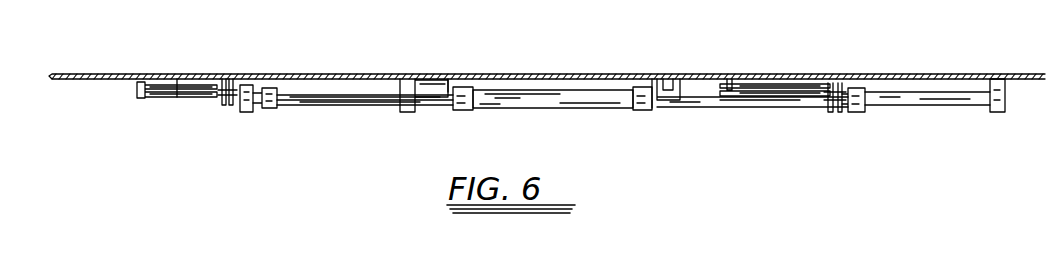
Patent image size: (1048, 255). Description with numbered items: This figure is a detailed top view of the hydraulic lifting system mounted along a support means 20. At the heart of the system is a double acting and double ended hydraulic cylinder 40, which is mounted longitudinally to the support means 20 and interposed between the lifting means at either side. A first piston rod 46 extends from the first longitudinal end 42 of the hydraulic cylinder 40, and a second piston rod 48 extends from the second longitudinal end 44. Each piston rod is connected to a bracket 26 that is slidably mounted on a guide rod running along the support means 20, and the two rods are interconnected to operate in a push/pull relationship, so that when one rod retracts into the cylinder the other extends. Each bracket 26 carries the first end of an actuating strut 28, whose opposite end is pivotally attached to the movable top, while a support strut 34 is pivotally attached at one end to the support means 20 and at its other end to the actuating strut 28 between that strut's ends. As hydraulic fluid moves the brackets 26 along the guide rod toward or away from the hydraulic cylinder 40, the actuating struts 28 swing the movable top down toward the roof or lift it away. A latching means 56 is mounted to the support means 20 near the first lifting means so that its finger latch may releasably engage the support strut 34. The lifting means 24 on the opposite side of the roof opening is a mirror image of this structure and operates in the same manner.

The support means 20 is at (78, 72).
The lifting means 24 is at (253, 110).
The bracket 26 is at (260, 109).
The actuating strut 28 is at (178, 74).
The support strut 34 is at (173, 97).
The hydraulic cylinder 40 is at (545, 110).
The first longitudinal end 42 is at (463, 112).
The second longitudinal end 44 is at (641, 112).
The first piston rod 46 is at (432, 102).
The second piston rod 48 is at (717, 100).
The latching means 56 is at (236, 70).